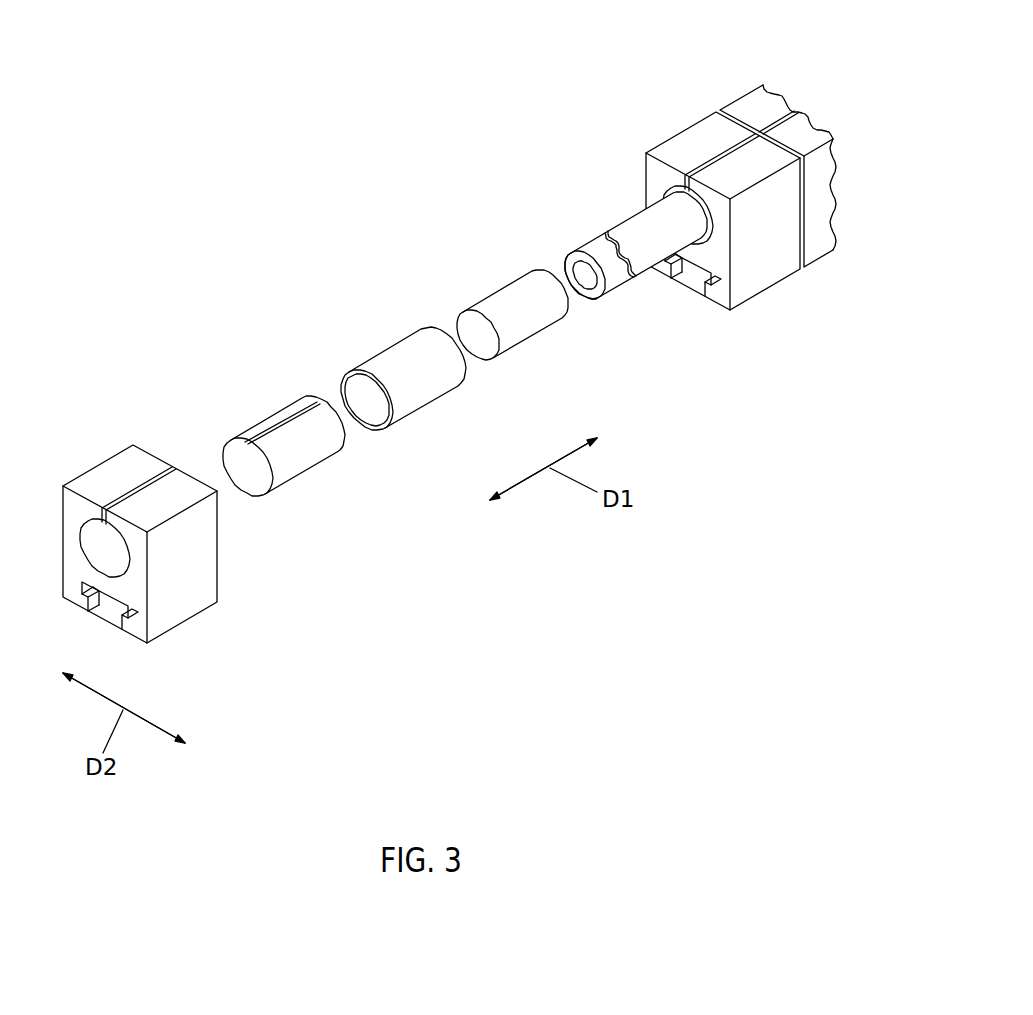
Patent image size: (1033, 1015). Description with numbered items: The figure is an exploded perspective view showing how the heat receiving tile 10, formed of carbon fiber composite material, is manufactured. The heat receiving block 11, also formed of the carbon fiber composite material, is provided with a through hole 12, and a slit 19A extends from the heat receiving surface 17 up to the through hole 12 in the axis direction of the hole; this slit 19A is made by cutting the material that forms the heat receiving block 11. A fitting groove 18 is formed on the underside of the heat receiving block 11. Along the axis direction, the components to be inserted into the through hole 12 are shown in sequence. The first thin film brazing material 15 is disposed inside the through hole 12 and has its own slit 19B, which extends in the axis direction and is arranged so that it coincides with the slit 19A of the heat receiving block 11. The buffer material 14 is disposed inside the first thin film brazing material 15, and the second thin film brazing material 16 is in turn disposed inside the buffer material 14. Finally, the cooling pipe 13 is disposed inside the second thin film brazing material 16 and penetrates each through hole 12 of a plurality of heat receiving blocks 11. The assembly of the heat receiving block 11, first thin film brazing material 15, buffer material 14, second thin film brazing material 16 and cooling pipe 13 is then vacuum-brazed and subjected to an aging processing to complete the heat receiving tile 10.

The heat receiving tile 10 is at (155, 408).
The heat receiving block 11 is at (192, 590).
The through hole 12 is at (100, 548).
The cooling pipe 13 is at (597, 245).
The buffer material 14 is at (400, 348).
The first thin film brazing material 15 is at (277, 417).
The second thin film brazing material 16 is at (507, 287).
The heat receiving surface 17 is at (175, 490).
The fitting groove 18 is at (112, 607).
The slit 19A is at (138, 487).
The slit 19B is at (308, 402).